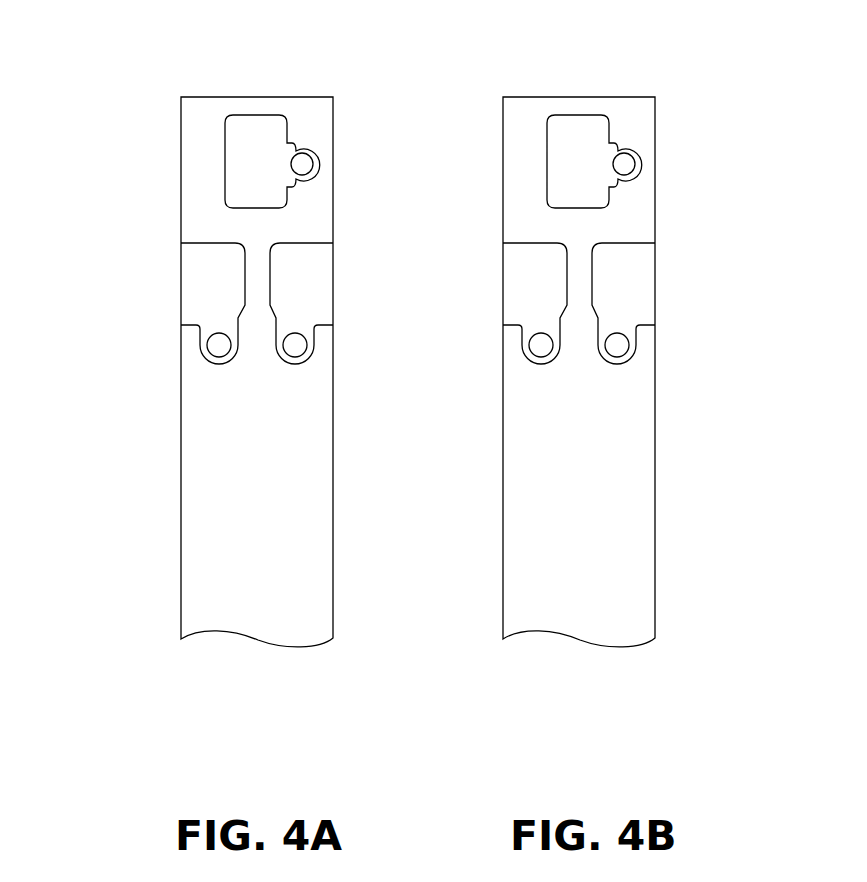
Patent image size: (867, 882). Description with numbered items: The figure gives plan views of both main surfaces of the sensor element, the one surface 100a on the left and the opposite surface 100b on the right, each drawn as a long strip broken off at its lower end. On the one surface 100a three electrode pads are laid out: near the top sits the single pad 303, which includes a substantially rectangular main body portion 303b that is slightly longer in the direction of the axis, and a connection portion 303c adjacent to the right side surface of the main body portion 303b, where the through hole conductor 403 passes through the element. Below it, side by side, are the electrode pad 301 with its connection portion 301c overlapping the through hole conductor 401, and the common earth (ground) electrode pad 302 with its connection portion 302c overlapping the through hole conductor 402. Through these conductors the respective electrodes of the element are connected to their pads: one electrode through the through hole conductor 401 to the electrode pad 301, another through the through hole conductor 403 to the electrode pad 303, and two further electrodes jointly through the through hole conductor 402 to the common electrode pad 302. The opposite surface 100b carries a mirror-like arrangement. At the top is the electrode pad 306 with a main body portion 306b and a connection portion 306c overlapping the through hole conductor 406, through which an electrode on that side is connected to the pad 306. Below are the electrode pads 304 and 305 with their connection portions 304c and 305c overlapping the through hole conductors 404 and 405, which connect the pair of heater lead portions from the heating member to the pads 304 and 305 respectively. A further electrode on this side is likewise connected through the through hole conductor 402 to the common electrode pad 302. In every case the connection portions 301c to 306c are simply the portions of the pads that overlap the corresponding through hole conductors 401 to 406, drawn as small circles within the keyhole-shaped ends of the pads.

In FIG. 4A, the one surface of the sensor element 100a is at (312, 107).
In FIG. 4B, the opposite surface of the sensor element 100b is at (632, 110).
In FIG. 4A, the electrode pad 301 is at (193, 291).
In FIG. 4A, the connection portion 301c is at (219, 345).
In FIG. 4A, the common electrode pad 302 is at (320, 268).
In FIG. 4A, the connection portion 302c is at (295, 345).
In FIG. 4A, the electrode pad 303 is at (259, 160).
In FIG. 4A, the main body portion 303b is at (272, 136).
In FIG. 4A, the connection portion 303c is at (302, 164).
In FIG. 4B, the electrode pad 304 is at (515, 292).
In FIG. 4B, the connection portion 304c is at (541, 345).
In FIG. 4B, the electrode pad 305 is at (637, 283).
In FIG. 4B, the connection portion 305c is at (617, 345).
In FIG. 4B, the electrode pad 306 is at (590, 148).
In FIG. 4B, the main body portion 306b is at (595, 137).
In FIG. 4B, the connection portion 306c is at (624, 164).
In FIG. 4A, the through hole conductor 401 is at (128, 349).
In FIG. 4A, the through hole conductor 402 is at (350, 379).
In FIG. 4A, the through hole conductor 403 is at (384, 175).
In FIG. 4B, the through hole conductor 404 is at (454, 349).
In FIG. 4B, the through hole conductor 405 is at (675, 379).
In FIG. 4B, the through hole conductor 406 is at (704, 177).